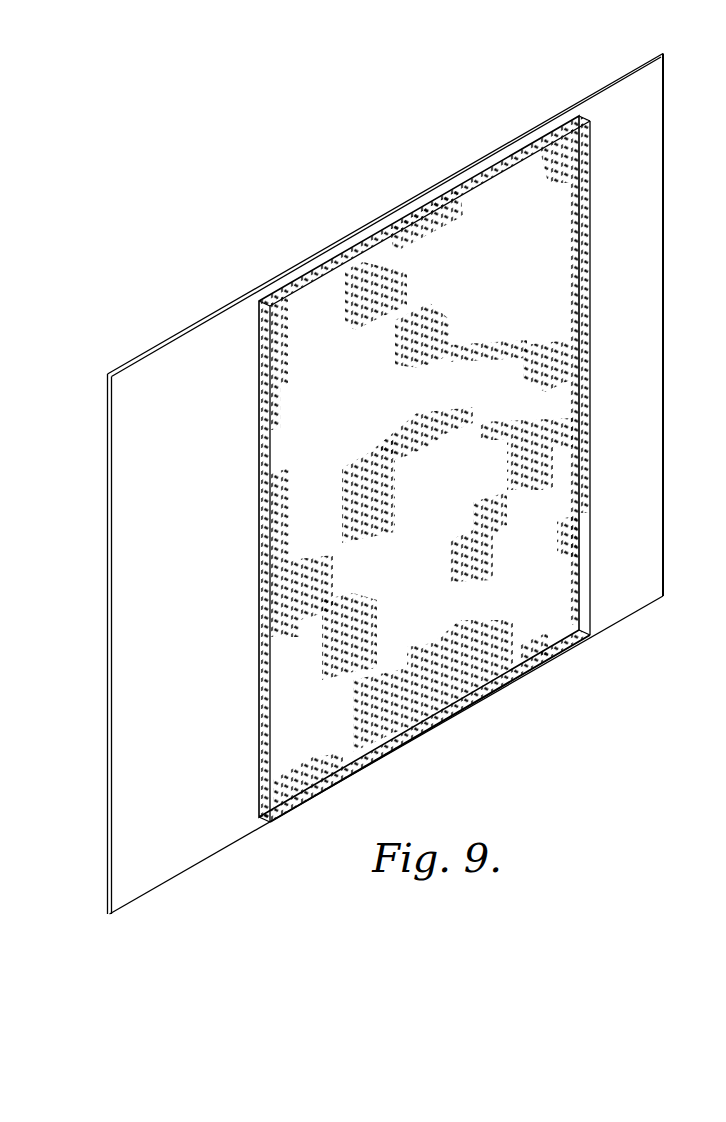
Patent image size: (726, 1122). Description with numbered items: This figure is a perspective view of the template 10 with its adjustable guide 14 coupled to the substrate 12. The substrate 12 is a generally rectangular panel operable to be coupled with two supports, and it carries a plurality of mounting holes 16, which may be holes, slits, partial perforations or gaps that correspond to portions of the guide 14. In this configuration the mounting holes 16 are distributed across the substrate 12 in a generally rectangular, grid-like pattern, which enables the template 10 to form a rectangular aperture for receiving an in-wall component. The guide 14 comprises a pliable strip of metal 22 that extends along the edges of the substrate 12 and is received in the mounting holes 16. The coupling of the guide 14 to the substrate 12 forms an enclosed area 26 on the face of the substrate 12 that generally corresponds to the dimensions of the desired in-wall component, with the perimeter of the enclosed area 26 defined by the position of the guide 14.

The template 10 is at (314, 207).
The substrate 12 is at (203, 350).
The adjustable guide 14 is at (515, 157).
The mounting holes 16 is at (443, 317).
The pliable strip of metal 22 is at (273, 298).
The enclosed area 26 is at (541, 624).